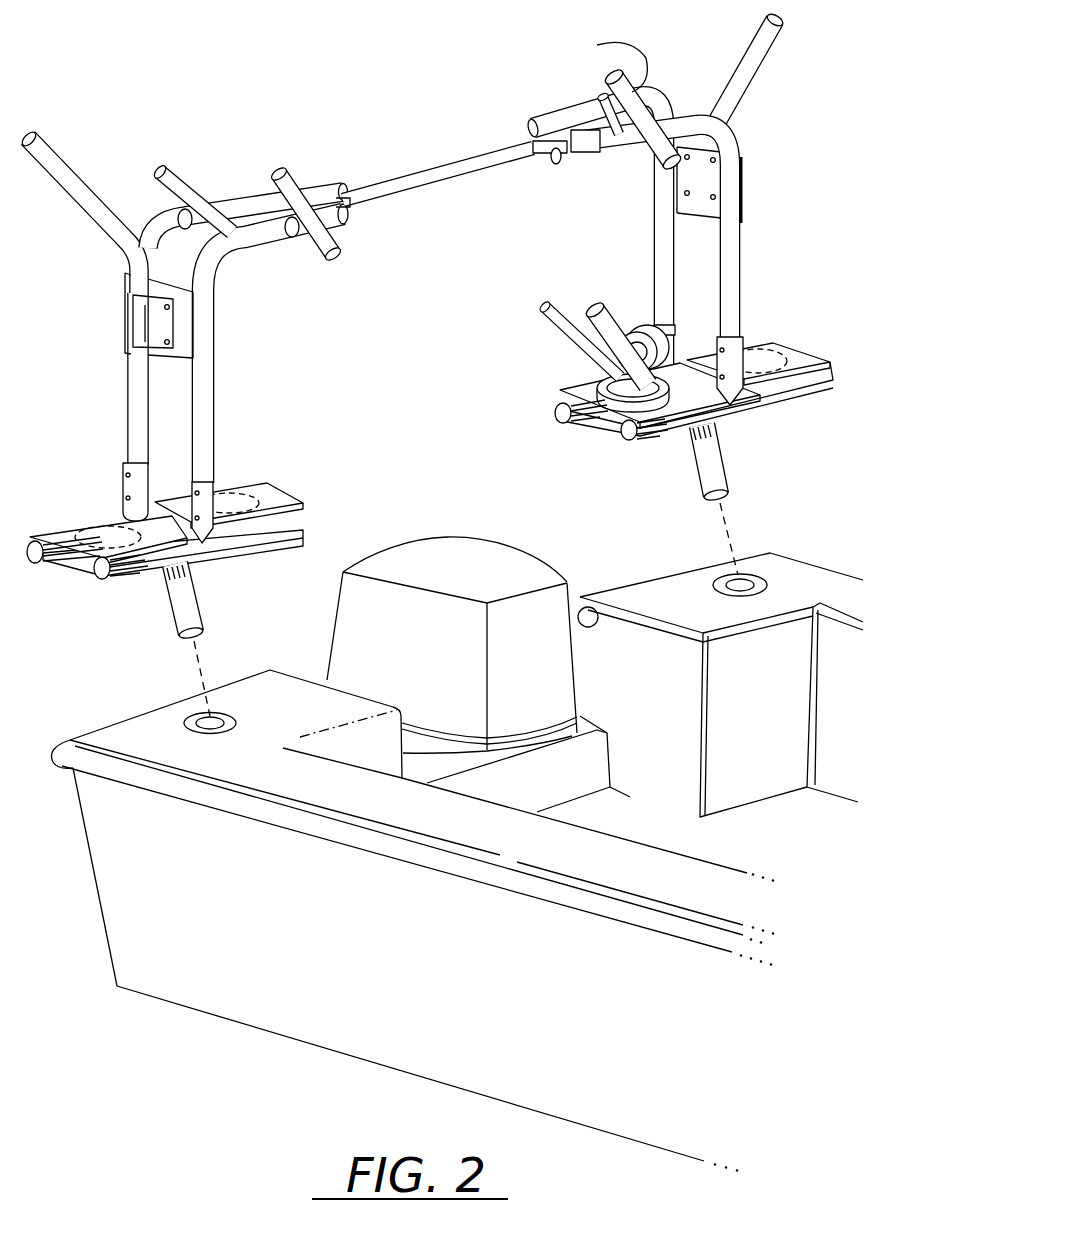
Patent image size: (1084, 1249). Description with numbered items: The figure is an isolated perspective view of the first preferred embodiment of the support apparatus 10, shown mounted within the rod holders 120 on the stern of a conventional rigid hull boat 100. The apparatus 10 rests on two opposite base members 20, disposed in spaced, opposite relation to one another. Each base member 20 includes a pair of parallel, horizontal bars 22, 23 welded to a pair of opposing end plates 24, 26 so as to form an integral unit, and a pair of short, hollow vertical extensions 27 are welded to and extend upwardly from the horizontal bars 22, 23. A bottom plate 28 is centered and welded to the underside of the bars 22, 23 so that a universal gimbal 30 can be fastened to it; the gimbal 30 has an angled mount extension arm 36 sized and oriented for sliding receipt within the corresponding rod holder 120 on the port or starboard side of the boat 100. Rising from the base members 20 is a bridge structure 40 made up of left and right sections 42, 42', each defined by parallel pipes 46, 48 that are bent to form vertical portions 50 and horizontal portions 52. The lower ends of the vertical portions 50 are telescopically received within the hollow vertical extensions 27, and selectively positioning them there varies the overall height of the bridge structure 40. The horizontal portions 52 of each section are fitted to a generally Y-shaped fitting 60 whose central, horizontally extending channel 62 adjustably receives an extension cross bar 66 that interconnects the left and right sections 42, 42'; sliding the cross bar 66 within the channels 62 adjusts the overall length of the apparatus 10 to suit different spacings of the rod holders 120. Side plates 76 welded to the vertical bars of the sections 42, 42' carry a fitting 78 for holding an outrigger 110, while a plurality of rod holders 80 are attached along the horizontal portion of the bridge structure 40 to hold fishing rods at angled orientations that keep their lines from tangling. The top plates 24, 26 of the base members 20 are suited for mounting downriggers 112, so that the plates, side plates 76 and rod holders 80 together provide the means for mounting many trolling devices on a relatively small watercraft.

The support apparatus 10 is at (440, 364).
The base member 20 is at (444, 506).
The horizontal bar 22 is at (101, 579).
The horizontal bar 23 is at (33, 563).
The end plate 24 is at (63, 527).
The end plate 26 is at (278, 500).
The hollow vertical extension 27 is at (126, 496).
The bottom plate 28 is at (222, 551).
The universal gimbal 30 is at (460, 570).
The angled mount extension arm 36 is at (200, 605).
The bridge structure 40 is at (430, 161).
The left bridge section 42 is at (250, 382).
The right bridge section 42' is at (775, 284).
The parallel pipe 46 is at (129, 386).
The parallel pipe 48 is at (511, 324).
The vertical portion 50 is at (433, 304).
The horizontal portion 52 is at (257, 230).
The Y-shaped fitting 60 is at (330, 183).
The horizontally extending channel 62 is at (341, 203).
The extension cross bar 66 is at (483, 152).
The side plate 76 is at (125, 289).
The fitting 78 is at (135, 333).
The rod holder 80 is at (161, 168).
The rigid hull boat 100 is at (449, 843).
The outrigger 110 is at (58, 158).
The downrigger 112 is at (605, 352).
The rod holder 120 is at (196, 718).